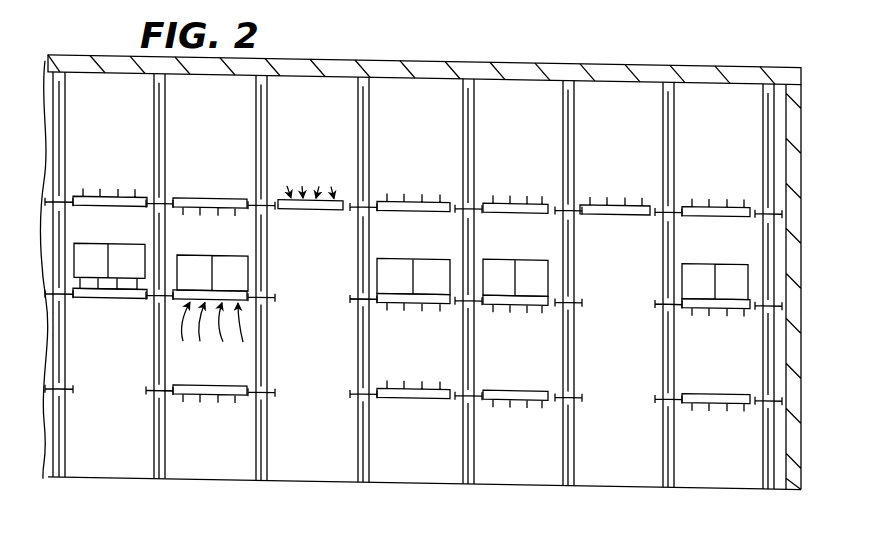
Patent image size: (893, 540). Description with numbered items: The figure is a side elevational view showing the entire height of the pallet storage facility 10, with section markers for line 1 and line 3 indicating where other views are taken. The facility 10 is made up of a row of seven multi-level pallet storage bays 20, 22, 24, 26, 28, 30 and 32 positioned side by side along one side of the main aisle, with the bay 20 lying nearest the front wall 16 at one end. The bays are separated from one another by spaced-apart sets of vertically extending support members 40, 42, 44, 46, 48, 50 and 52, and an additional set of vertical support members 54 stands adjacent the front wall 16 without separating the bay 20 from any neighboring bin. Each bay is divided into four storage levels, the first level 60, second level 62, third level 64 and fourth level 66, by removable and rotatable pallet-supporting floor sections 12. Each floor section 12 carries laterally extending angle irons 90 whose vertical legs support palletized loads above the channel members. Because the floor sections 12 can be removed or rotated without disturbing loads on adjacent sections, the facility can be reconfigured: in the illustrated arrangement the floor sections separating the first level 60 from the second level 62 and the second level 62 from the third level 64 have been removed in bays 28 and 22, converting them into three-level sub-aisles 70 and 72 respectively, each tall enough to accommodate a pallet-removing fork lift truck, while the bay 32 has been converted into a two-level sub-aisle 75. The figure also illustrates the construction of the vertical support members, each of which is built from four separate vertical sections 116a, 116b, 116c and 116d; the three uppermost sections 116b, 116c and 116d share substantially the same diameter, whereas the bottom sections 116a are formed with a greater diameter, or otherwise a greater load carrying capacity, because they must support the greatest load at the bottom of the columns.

The pallet storage facility 10 is at (466, 52).
The pallet-supporting floor section 12 is at (293, 206).
The front wall 16 is at (785, 339).
The pallet storage bay 20 is at (690, 93).
The pallet storage bay 22 is at (597, 95).
The pallet storage bay 24 is at (500, 91).
The pallet storage bay 26 is at (393, 93).
The pallet storage bay 28 is at (323, 79).
The pallet storage bay 30 is at (243, 96).
The pallet storage bay 32 is at (108, 105).
The set of vertically extending support members 40 is at (676, 152).
The set of vertically extending support members 42 is at (575, 152).
The set of vertically extending support members 44 is at (477, 154).
The set of vertically extending support members 46 is at (370, 154).
The set of vertically extending support members 48 is at (270, 153).
The set of vertically extending support members 50 is at (166, 155).
The set of vertically extending support members 52 is at (63, 157).
The set of vertically extending support members 54 is at (762, 102).
The first storage level 60 is at (680, 443).
The second storage level 62 is at (690, 353).
The third storage level 64 is at (677, 228).
The fourth storage level 66 is at (672, 168).
The sub-aisle 70 is at (332, 310).
The sub-aisle 72 is at (636, 307).
The two-level sub-aisle 75 is at (120, 403).
The angle iron 90 is at (258, 263).
The bottom vertical section 116a is at (360, 446).
The vertical section 116b is at (360, 359).
The vertical section 116c is at (362, 254).
The vertical section 116d is at (362, 107).
The section line 1- 1 is at (32, 230).
The section line 3- 3 is at (782, 27).